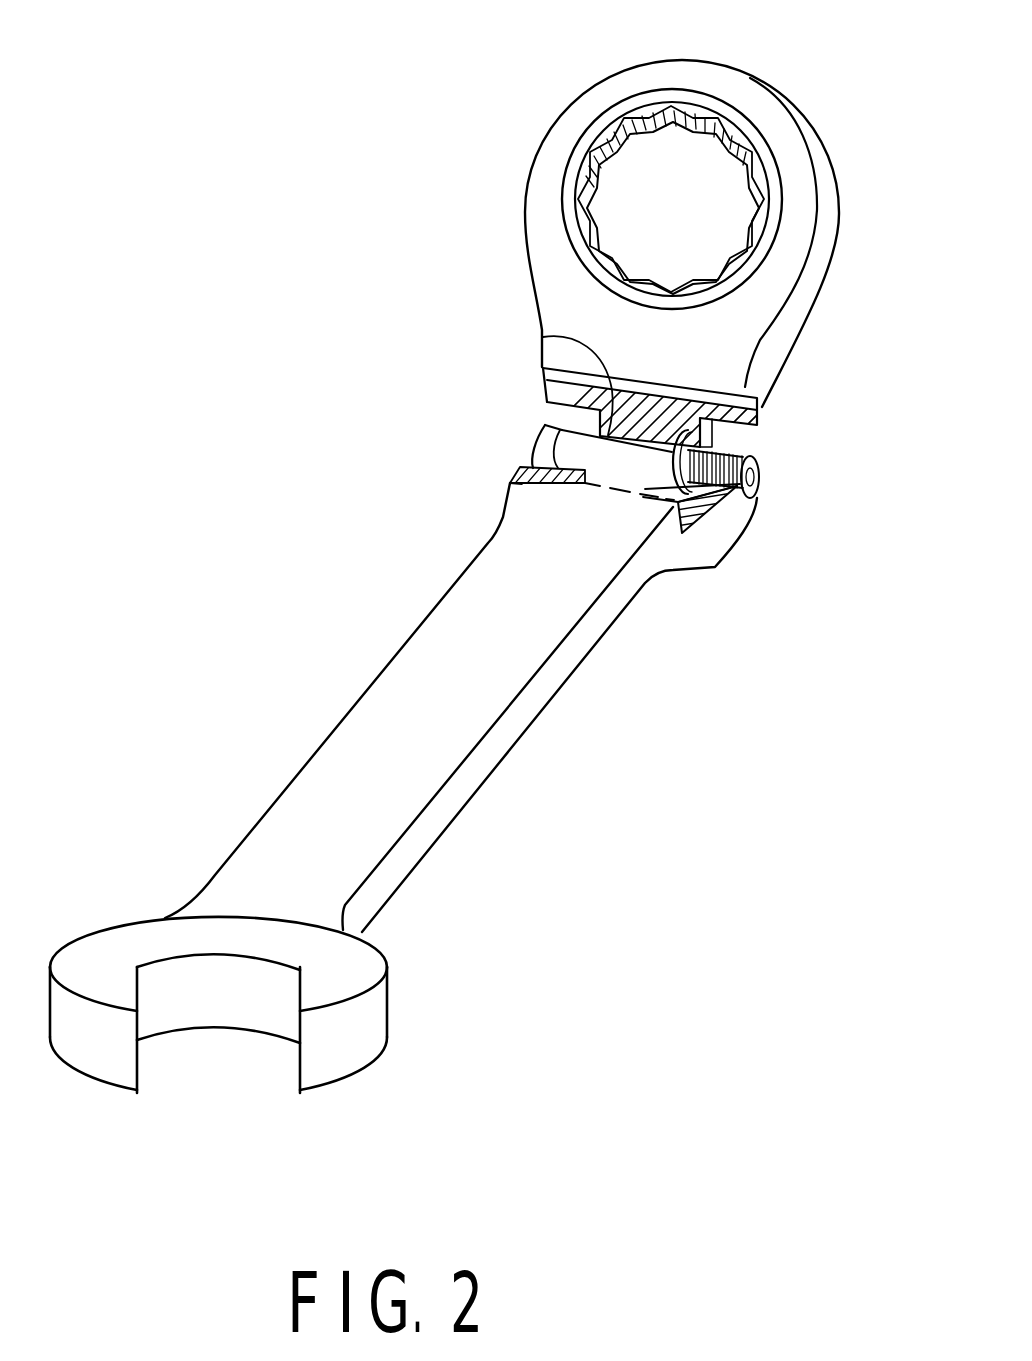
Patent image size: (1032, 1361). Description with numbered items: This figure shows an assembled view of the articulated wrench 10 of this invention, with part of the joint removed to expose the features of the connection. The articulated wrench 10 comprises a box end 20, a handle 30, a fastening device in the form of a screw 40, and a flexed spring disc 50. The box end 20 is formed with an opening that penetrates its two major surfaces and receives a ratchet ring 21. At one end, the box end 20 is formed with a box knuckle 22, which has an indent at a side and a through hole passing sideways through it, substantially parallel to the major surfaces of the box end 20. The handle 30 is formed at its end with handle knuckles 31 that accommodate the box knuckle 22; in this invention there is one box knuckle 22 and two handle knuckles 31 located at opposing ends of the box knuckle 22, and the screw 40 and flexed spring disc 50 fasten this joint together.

The articulated wrench 10 is at (299, 421).
The box end 20 is at (538, 227).
The ratchet ring 21 is at (647, 122).
The box knuckle 22 is at (548, 342).
The handle 30 is at (495, 672).
The handle knuckle 31 is at (757, 498).
The screw 40 is at (597, 453).
The flexed spring disc 50 is at (708, 440).